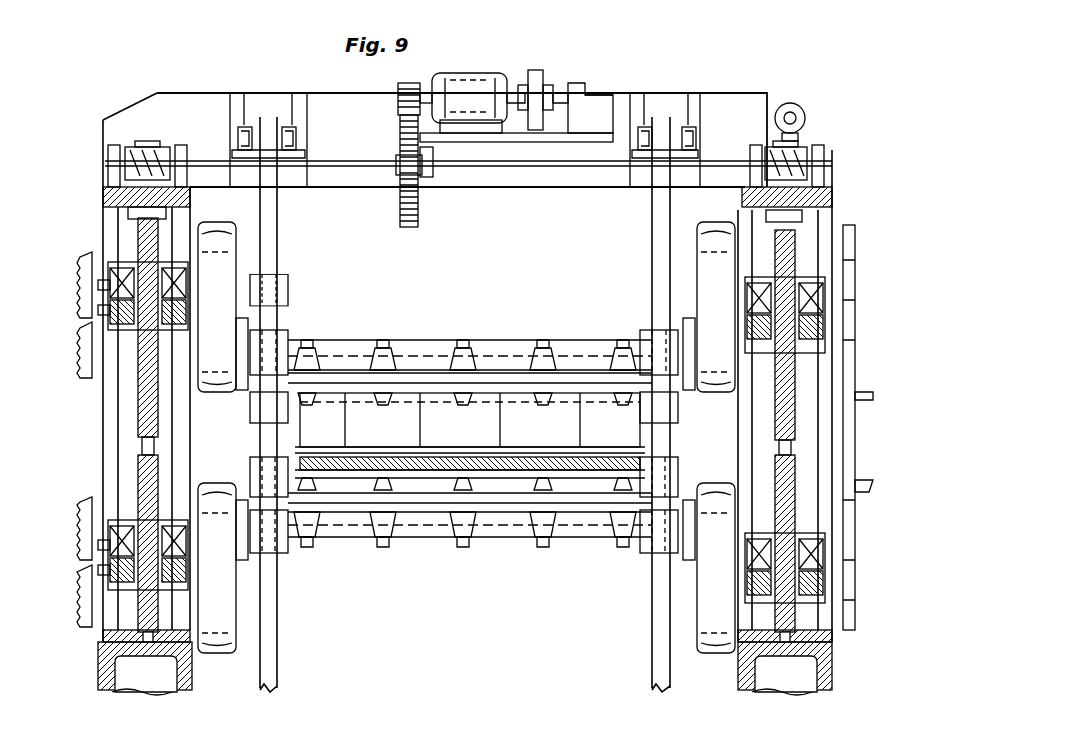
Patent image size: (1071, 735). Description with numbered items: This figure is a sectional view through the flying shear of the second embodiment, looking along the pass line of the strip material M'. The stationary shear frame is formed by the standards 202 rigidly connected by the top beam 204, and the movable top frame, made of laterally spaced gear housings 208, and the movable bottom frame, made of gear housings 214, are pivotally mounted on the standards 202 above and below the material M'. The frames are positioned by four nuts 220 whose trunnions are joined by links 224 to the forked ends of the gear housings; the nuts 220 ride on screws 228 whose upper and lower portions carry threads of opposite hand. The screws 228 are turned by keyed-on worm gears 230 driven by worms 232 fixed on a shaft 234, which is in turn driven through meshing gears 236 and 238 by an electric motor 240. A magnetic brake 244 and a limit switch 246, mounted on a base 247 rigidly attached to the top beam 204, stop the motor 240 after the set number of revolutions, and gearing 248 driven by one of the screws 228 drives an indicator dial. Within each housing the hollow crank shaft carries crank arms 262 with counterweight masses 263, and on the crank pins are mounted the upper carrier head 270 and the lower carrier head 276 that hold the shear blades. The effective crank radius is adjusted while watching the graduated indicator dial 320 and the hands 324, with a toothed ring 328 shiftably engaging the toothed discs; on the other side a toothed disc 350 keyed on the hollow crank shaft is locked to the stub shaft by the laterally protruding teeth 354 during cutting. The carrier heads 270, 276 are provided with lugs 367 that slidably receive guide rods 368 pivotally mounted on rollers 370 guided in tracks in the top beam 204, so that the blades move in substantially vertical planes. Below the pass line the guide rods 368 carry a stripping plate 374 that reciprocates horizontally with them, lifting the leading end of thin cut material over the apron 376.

The standards 202 is at (150, 688).
The top beam 204 is at (355, 92).
The gear housings 208 is at (128, 253).
The gear housings 214 is at (130, 620).
The nuts 220 is at (135, 362).
The links 224 is at (120, 282).
The screws 228 is at (142, 440).
The worm gears 230 is at (150, 142).
The worms 232 is at (120, 150).
The shaft 234 is at (370, 168).
The gear 236 is at (410, 227).
The gear 238 is at (398, 96).
The electric motor 240 is at (487, 87).
The magnetic brake 244 is at (538, 80).
The limit switch 246 is at (595, 103).
The base 247 is at (487, 142).
The gearing 248 is at (800, 106).
The crank arms 262 is at (255, 402).
The counterweight masses 263 is at (230, 222).
The carrier head 270 is at (452, 333).
The carrier head 276 is at (435, 546).
The graduated indicator dial 320 is at (865, 480).
The hands 324 is at (865, 392).
The toothed ring 328 is at (850, 230).
The toothed disc 350 is at (80, 312).
The teeth 354 is at (80, 355).
The lugs 367 is at (252, 468).
The guide rods 368 is at (277, 270).
The rollers 370 is at (290, 126).
The stripping plate 374 is at (452, 452).
The apron 376 is at (622, 456).
The material M' is at (469, 420).